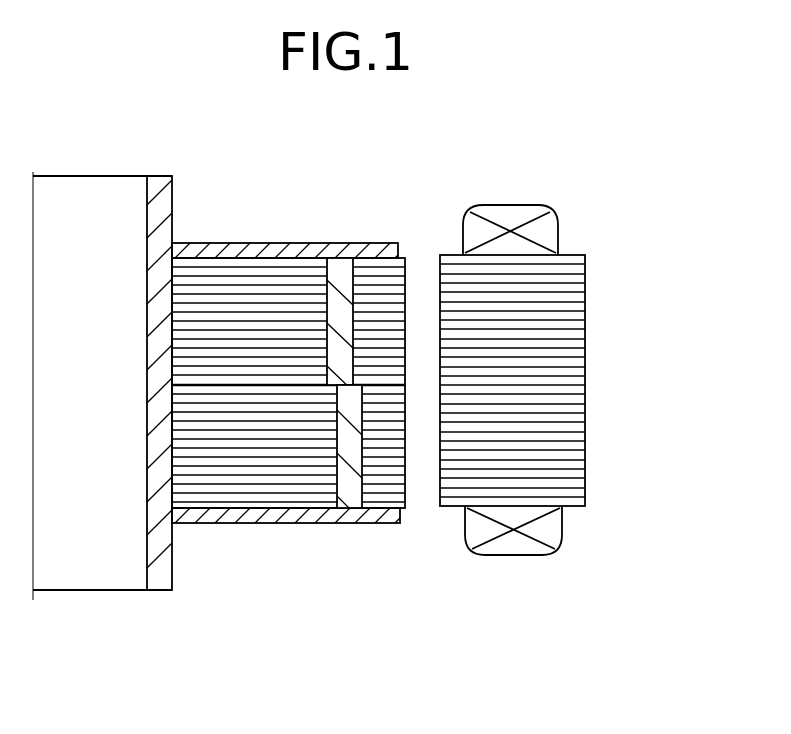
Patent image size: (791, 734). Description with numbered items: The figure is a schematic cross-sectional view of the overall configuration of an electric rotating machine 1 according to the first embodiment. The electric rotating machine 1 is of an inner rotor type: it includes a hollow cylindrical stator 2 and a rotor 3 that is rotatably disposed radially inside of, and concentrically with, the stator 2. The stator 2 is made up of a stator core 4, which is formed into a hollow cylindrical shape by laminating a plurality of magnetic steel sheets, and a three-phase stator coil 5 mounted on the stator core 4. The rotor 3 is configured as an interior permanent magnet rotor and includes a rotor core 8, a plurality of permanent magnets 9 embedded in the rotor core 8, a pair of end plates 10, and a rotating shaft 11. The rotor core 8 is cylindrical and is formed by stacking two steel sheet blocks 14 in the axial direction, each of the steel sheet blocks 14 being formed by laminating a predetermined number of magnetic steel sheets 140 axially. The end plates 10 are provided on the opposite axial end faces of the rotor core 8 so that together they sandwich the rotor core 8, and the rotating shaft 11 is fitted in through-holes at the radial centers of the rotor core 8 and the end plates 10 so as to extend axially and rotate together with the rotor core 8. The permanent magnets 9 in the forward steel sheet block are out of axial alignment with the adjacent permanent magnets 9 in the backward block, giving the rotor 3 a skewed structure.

The electric rotating machine 1 is at (578, 188).
The stator 2 is at (480, 570).
The rotor 3 is at (193, 590).
The stator core 4 is at (567, 392).
The stator coil 5 is at (550, 535).
The rotor core 8 is at (400, 492).
The permanent magnets 9 is at (342, 277).
The end plates 10 is at (270, 245).
The rotating shaft 11 is at (172, 228).
The steel sheet blocks 14 is at (291, 265).
The magnetic steel sheets 140 is at (202, 477).